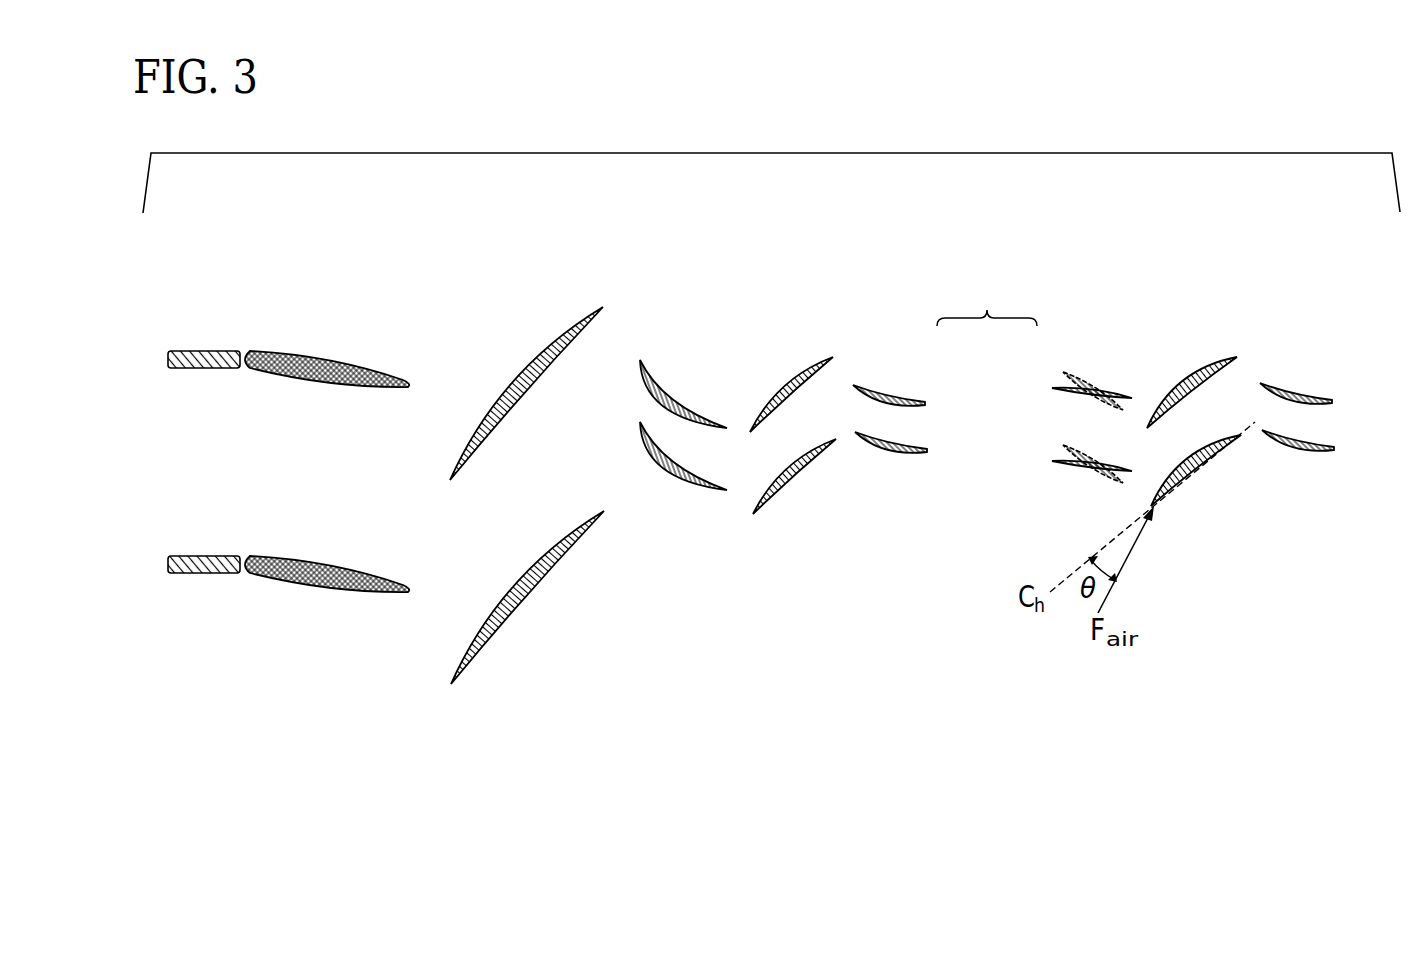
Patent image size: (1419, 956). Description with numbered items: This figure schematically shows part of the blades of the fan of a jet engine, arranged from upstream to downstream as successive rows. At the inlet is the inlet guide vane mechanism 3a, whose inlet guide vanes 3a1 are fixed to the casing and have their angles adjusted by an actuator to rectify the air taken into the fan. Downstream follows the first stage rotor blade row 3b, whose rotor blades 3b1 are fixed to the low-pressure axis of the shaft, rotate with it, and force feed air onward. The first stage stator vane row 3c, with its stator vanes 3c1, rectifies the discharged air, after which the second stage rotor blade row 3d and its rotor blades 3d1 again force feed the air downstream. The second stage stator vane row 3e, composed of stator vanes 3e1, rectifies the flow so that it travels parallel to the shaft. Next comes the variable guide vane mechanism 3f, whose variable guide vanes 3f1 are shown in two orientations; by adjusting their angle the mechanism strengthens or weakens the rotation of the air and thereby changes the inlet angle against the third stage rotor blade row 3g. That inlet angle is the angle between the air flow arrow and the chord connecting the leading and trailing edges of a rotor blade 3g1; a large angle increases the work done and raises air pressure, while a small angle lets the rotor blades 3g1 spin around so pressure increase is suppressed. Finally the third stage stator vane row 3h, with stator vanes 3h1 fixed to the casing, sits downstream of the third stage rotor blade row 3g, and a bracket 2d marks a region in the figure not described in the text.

The gap between blade rows 2d is at (987, 296).
The inlet guide vane mechanism 3a is at (267, 296).
The inlet guide vanes 3a1 is at (345, 375).
The first stage rotor blade row 3b is at (515, 296).
The rotor blades 3b1 is at (508, 383).
The first stage stator vane row 3c is at (665, 294).
The stator vanes 3c1 is at (658, 397).
The second stage rotor blade row 3d is at (790, 296).
The rotor blades 3d1 is at (783, 402).
The second stage stator vane row 3e is at (887, 296).
The stator vanes 3e1 is at (893, 401).
The variable guide vane mechanism 3f is at (1094, 294).
The variable guide vanes 3f1 is at (1070, 389).
The third stage rotor blade row 3g is at (1197, 294).
The rotor blades 3g1 is at (1182, 390).
The third stage stator vane row 3h is at (1300, 294).
The stator vanes 3h1 is at (1295, 402).